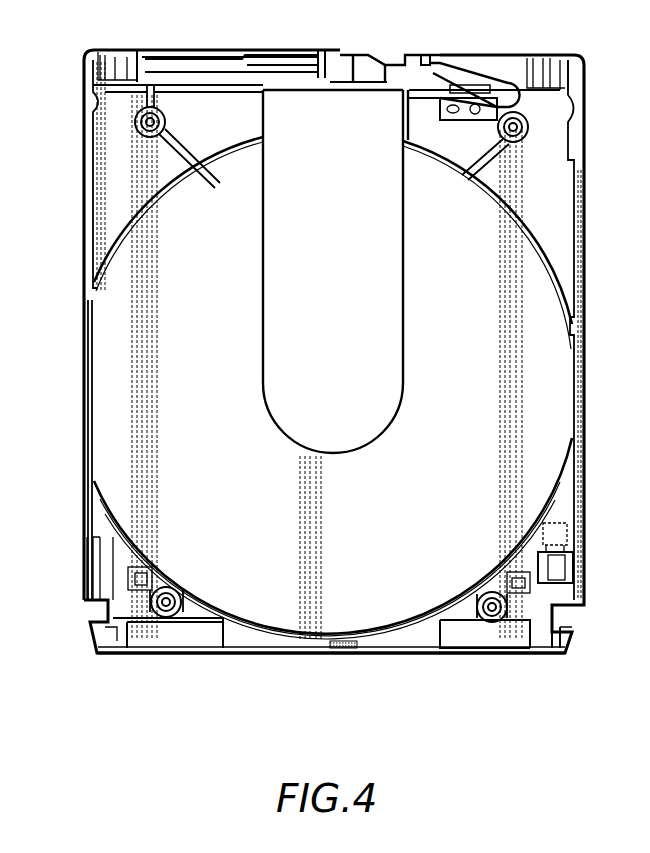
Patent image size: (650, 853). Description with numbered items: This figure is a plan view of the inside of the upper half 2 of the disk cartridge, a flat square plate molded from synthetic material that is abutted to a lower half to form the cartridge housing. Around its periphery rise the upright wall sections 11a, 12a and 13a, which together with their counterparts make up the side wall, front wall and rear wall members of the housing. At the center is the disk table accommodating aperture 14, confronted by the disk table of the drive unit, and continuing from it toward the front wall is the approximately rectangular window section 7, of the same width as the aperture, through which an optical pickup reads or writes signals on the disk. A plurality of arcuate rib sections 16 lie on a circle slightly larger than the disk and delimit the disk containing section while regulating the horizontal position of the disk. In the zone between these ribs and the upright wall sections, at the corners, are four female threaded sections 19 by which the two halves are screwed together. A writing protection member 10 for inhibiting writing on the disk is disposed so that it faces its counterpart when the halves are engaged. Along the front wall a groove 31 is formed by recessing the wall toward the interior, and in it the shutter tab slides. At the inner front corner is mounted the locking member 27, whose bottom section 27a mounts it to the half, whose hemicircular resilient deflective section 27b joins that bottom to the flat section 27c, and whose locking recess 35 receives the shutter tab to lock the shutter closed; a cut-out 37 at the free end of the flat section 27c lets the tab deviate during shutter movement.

The upper half 2 is at (574, 221).
The window section 7 is at (398, 248).
The writing protection member 10 is at (558, 567).
The upright wall section 11a is at (84, 313).
The upright wall section 12a is at (195, 85).
The upright wall section 13a is at (300, 653).
The disk table accommodating aperture 14 is at (340, 447).
The arcuate rib section 16 is at (160, 205).
The female threaded section 19 is at (153, 108).
The locking member 27 is at (493, 66).
The bottom section 27a is at (470, 120).
The resilient deflective section 27b is at (514, 94).
The flat section 27c is at (380, 58).
The groove 31 is at (268, 63).
The locking recess 35 is at (425, 55).
The cut-out 37 is at (385, 62).